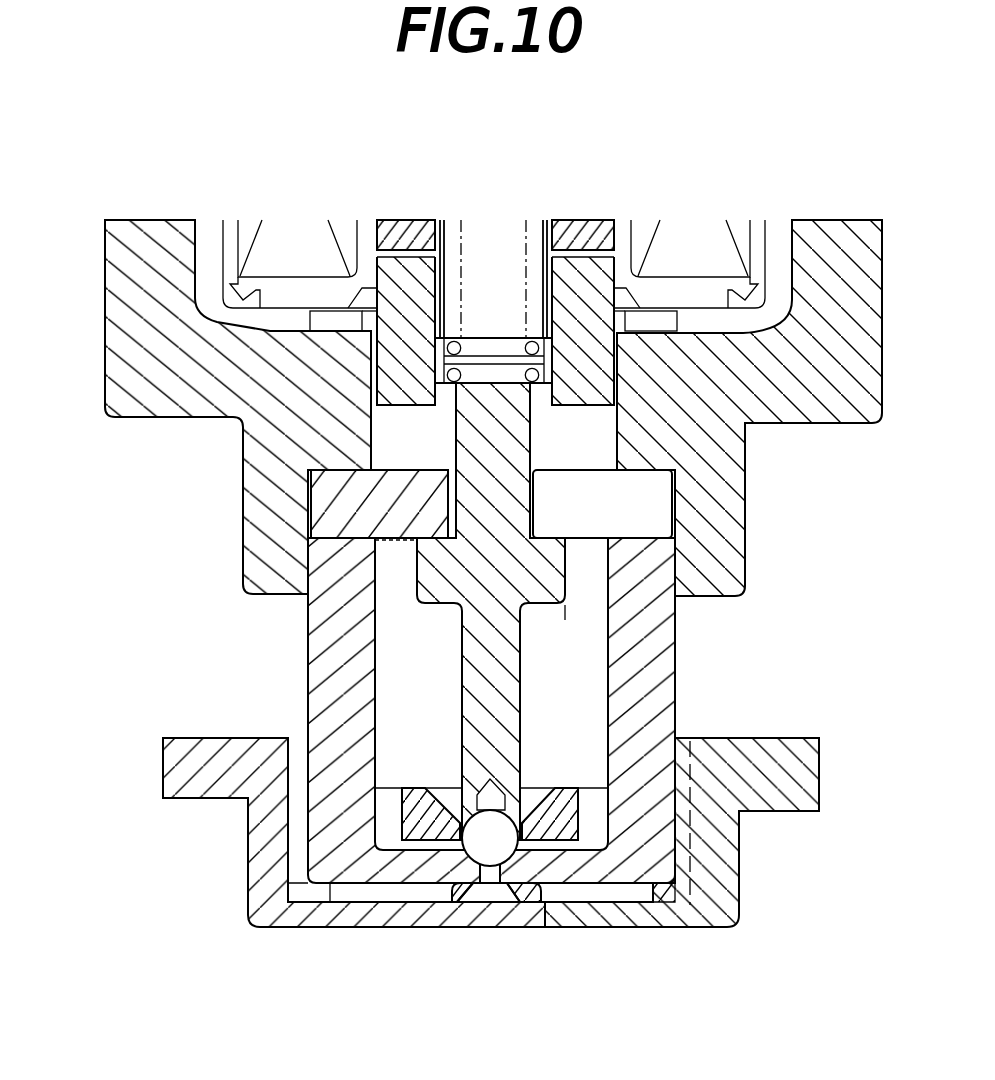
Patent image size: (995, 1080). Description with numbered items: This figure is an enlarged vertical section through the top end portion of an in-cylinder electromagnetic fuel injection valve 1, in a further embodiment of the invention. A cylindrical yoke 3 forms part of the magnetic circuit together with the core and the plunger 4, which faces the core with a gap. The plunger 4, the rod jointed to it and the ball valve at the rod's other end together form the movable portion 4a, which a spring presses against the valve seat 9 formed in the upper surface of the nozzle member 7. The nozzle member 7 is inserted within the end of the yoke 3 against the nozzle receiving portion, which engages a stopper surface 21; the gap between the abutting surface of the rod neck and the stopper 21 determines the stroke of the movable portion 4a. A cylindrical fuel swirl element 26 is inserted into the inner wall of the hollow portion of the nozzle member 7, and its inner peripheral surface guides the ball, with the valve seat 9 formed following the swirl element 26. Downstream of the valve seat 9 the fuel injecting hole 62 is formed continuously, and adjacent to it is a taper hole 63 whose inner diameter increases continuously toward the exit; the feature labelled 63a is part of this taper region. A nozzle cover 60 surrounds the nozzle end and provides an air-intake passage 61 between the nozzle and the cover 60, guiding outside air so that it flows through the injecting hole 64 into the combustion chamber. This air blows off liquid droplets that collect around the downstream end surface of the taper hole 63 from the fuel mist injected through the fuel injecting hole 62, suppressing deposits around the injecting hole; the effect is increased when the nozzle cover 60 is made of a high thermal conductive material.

The electromagnetic fuel injection valve 1 is at (618, 208).
The cylindrical yoke 3 is at (120, 373).
The plunger 4 is at (392, 388).
The movable portion 4a is at (577, 613).
The stopper surface 21 is at (327, 520).
The nozzle member 7 is at (310, 667).
The fuel swirl element 26 is at (538, 780).
The nozzle cover 60 is at (819, 788).
The air-intake passage 61 is at (300, 840).
The valve seat 9 is at (437, 902).
The injecting hole 64 is at (414, 904).
The taper hole 63 is at (477, 902).
The fuel injecting hole 62 is at (497, 892).
The seat cone 63a is at (533, 892).